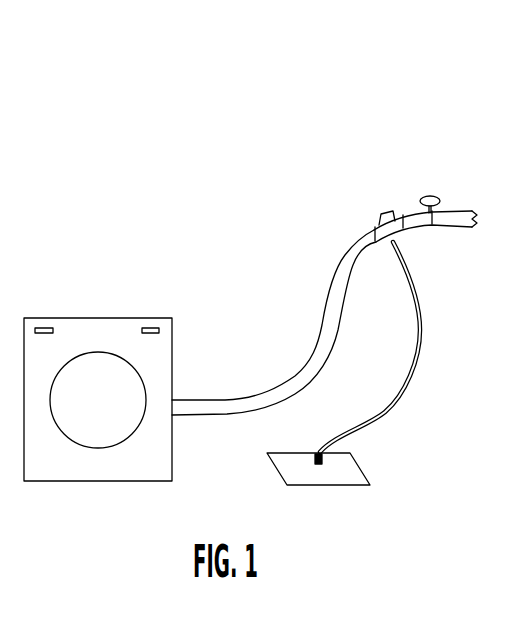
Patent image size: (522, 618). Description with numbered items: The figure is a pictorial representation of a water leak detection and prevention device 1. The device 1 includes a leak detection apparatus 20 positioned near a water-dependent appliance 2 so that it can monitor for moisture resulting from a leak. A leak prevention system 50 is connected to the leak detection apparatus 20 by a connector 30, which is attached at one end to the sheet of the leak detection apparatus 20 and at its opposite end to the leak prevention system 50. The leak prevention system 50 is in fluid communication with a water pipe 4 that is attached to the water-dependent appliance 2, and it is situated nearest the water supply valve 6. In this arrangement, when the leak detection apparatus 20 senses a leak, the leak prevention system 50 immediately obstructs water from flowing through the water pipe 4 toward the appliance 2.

The water leak detection and prevention device 1 is at (292, 122).
The water-dependent appliance 2 is at (100, 318).
The water pipe 4 is at (292, 379).
The water supply valve 6 is at (430, 196).
The leak detection apparatus 20 is at (336, 478).
The connector 30 is at (419, 362).
The leak prevention system 50 is at (383, 214).